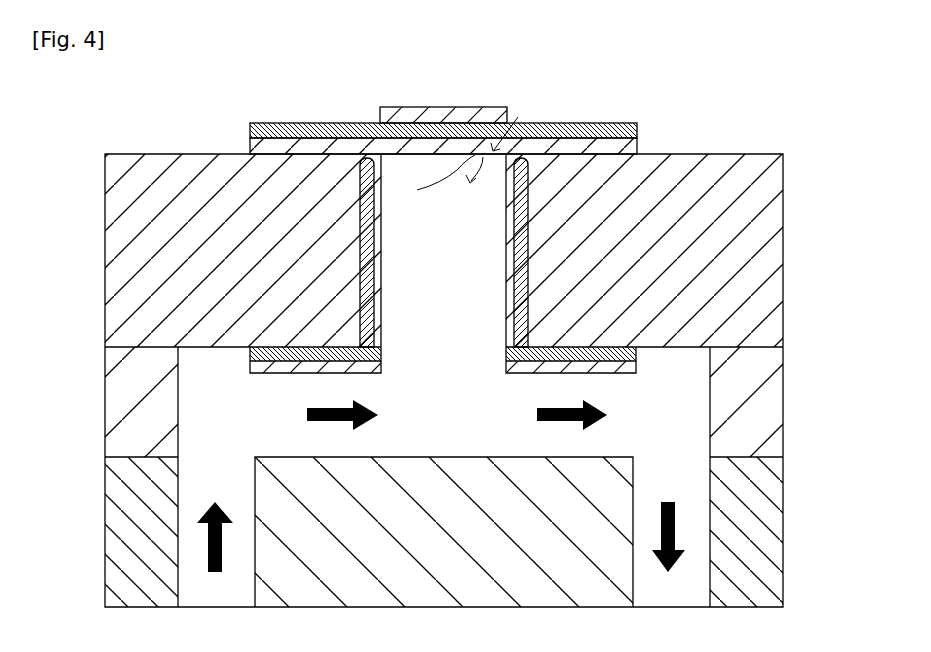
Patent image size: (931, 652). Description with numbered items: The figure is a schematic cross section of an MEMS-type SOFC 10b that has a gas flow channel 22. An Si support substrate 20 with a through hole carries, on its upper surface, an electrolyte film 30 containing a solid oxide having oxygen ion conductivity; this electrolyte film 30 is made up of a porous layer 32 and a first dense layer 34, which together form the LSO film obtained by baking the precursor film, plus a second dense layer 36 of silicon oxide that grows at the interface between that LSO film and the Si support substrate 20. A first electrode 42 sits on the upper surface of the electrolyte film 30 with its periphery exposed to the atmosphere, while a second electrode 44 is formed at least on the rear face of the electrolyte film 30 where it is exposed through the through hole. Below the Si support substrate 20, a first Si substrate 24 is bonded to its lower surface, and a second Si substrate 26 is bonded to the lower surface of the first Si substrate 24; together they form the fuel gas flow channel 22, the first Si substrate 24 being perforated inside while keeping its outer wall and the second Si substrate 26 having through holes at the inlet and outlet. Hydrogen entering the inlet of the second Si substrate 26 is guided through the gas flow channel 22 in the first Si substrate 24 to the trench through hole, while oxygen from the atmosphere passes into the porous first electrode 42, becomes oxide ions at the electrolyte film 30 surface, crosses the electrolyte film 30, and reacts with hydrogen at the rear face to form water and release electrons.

The MEMS-type SOFC 10b is at (886, 116).
The Si support substrate 20 is at (763, 233).
The gas flow channel 22 is at (634, 345).
The first Si substrate 24 is at (767, 428).
The second Si substrate 26 is at (776, 545).
The electrolyte film 30 is at (523, 114).
The porous layer 32 is at (491, 111).
The first dense layer 34 is at (633, 121).
The second dense layer 36 is at (627, 147).
The first electrode 42 is at (398, 113).
The second electrode 44 is at (636, 372).